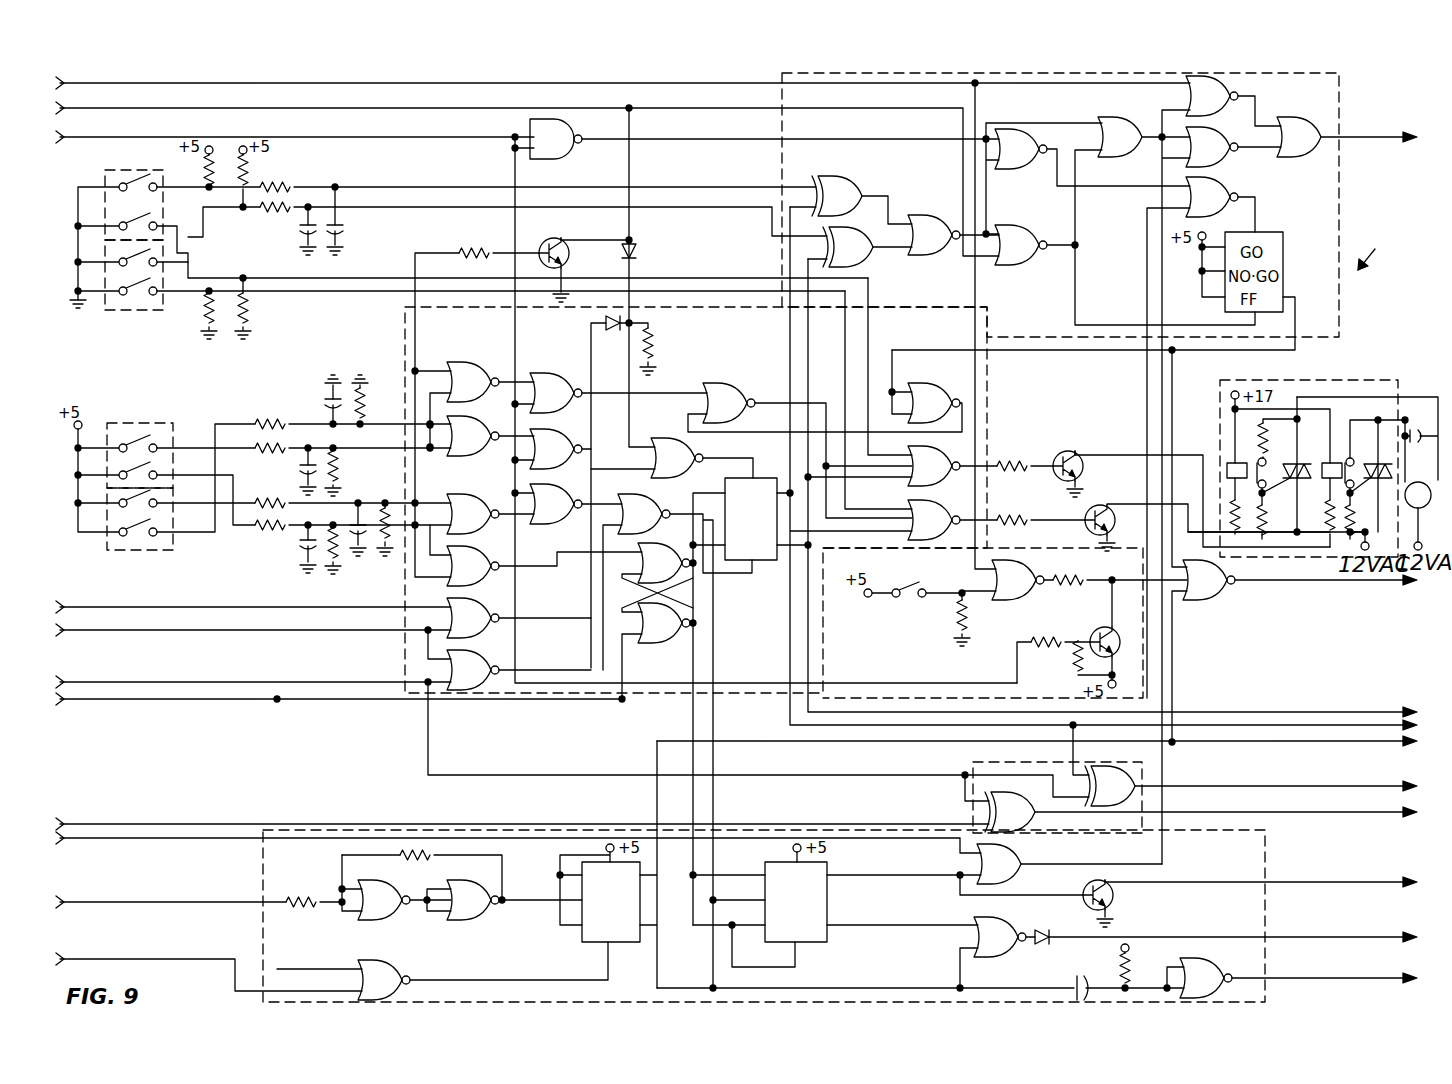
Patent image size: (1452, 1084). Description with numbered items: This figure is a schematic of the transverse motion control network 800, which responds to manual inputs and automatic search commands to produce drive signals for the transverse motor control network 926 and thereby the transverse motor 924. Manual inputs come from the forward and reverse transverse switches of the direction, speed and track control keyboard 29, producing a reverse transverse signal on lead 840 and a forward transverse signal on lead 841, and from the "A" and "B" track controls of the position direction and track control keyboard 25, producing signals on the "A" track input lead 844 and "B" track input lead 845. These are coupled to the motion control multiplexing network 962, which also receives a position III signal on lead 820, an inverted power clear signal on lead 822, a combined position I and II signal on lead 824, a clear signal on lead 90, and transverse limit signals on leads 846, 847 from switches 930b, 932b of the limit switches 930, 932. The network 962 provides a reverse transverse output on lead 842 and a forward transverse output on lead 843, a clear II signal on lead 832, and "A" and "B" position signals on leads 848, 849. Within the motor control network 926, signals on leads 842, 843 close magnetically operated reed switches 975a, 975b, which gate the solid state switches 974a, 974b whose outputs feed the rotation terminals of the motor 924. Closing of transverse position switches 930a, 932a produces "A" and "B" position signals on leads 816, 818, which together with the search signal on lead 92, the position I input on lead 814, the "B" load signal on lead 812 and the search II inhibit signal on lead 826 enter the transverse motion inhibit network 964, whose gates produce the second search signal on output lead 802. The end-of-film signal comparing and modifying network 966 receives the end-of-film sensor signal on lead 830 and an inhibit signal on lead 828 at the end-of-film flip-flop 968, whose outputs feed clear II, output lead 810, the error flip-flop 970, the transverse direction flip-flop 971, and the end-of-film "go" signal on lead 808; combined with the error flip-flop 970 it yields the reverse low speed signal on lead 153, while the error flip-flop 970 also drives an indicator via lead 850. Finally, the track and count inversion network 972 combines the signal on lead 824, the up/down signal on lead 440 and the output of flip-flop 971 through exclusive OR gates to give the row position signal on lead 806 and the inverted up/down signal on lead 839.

The lead 812 is at (76, 80).
The lead 814 is at (76, 105).
The lead 92 is at (84, 134).
The transverse motion limit switch 930 is at (130, 170).
The transverse position switch 930a is at (128, 180).
The switch 930b is at (145, 218).
The transverse motion limit switch 932 is at (115, 312).
The transverse position switch 932a is at (186, 262).
The switch 932b is at (135, 300).
The lead 816 is at (210, 190).
The lead 818 is at (215, 208).
The lead 846 is at (263, 280).
The lead 847 is at (270, 292).
The transverse motion inhibit network 964 is at (782, 150).
The output lead 802 is at (1398, 136).
The transverse motion control network 800 is at (1389, 255).
The motion control multiplexing network 962 is at (403, 656).
The transverse direction flip-flop 971 is at (765, 563).
The lead 842 is at (1118, 452).
The lead 843 is at (1127, 503).
The lead 832 is at (1395, 584).
The transverse motor control network 926 is at (1398, 380).
The magnetically operated reed switch 975a is at (1228, 463).
The magnetically operated reed switch 975b is at (1337, 463).
The solid state switch 974a is at (1293, 463).
The solid state switch 974b is at (1378, 462).
The transverse motor 924 is at (1438, 397).
The position direction and track control keyboard 25 is at (157, 420).
The direction, speed and track control keyboard 29 is at (153, 558).
The lead 840 is at (233, 425).
The "A" track input lead 844 is at (242, 450).
The "B" track input lead 845 is at (240, 492).
The lead 841 is at (228, 523).
The lead 820 is at (82, 607).
The lead 822 is at (74, 627).
The lead 824 is at (82, 684).
The lead 90 is at (72, 696).
The lead 440 is at (80, 826).
The lead 826 is at (74, 835).
The lead 830 is at (82, 903).
The lead 828 is at (82, 961).
The end-of-film signal comparing and modifying network 966 is at (263, 867).
The end-of-film flip-flop 968 is at (587, 942).
The error flip-flop 970 is at (828, 903).
The track and count inversion network 972 is at (973, 763).
The lead 849 is at (1355, 725).
The lead 848 is at (1383, 711).
The output lead 810 is at (1367, 742).
The lead 806 is at (1362, 785).
The lead 839 is at (1393, 816).
The lead 850 is at (1395, 872).
The lead 153 is at (1358, 935).
The lead 808 is at (1402, 978).